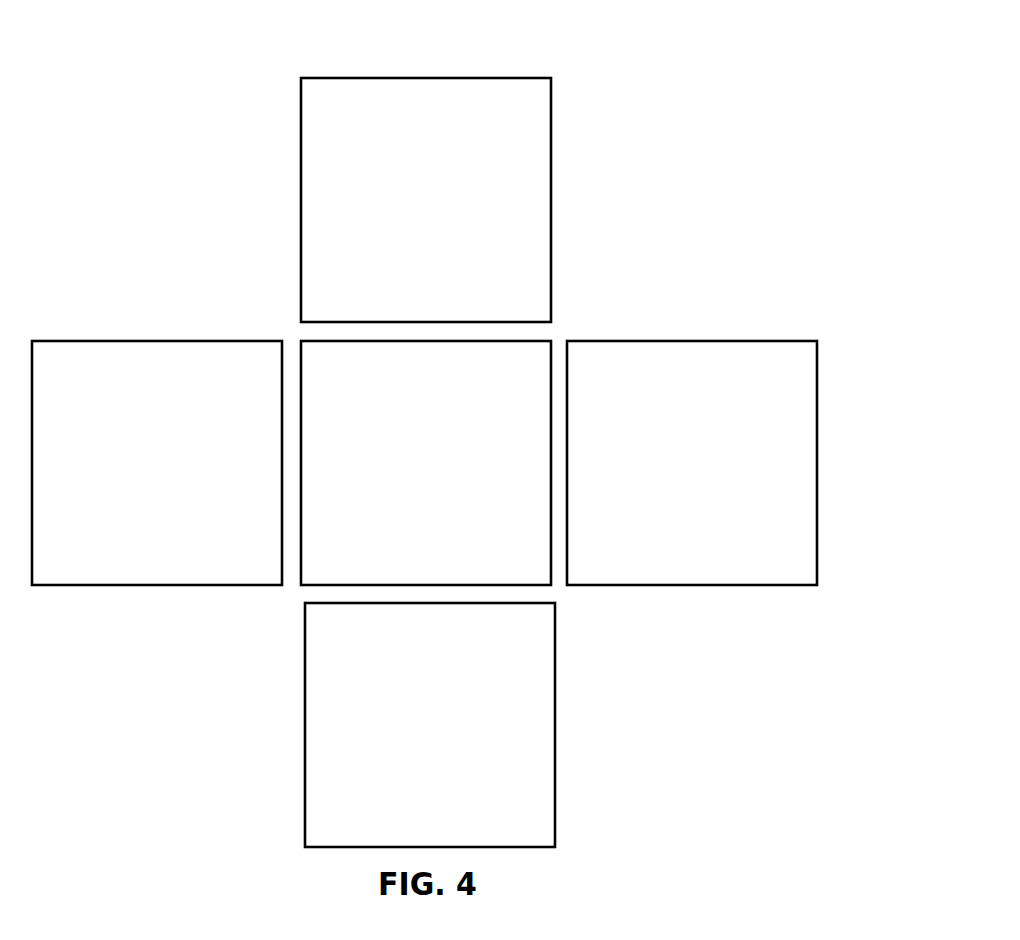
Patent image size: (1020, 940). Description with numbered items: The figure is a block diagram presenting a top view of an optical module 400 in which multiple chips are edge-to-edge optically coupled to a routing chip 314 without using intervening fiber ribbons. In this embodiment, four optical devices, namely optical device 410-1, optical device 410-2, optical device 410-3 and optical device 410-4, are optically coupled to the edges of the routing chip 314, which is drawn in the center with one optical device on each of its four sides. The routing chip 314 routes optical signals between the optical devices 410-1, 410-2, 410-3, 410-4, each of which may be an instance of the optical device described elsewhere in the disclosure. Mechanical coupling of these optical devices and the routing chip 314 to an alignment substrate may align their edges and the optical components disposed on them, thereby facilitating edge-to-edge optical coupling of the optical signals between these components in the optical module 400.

The optical module 400 is at (677, 65).
The optical device 410-1 is at (452, 222).
The optical device 410-2 is at (184, 484).
The optical device 410-3 is at (455, 748).
The optical device 410-4 is at (717, 484).
The routing chip 314 is at (442, 484).